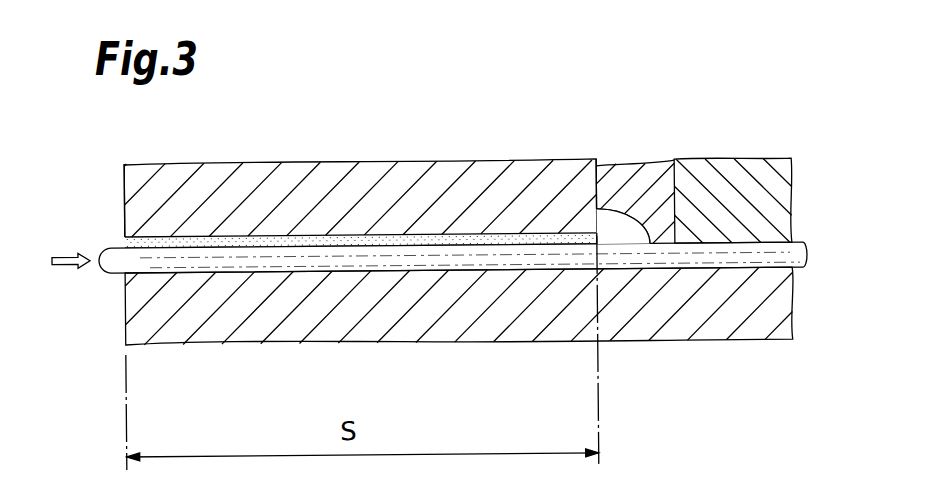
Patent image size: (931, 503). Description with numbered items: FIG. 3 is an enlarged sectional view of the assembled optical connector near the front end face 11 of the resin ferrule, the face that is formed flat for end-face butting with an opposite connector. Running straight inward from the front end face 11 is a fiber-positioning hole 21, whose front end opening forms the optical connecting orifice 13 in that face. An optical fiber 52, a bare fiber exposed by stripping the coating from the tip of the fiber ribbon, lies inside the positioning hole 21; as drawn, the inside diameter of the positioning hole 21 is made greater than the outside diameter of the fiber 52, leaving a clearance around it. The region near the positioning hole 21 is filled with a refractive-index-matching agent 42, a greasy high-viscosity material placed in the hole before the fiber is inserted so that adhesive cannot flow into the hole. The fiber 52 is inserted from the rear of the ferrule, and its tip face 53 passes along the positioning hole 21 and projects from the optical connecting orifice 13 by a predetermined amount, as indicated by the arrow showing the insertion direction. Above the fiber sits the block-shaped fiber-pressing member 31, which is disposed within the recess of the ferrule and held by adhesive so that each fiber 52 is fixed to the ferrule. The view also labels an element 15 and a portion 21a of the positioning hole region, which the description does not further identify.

The front end face 11 is at (125, 196).
The optical connecting orifice 13 is at (125, 242).
The adhesive filling portion 15 is at (625, 180).
The fiber-positioning hole 21 is at (466, 235).
The end face of fiber holding member 21a is at (598, 249).
The fiber-pressing member 31 is at (710, 167).
The refractive-index-matching agent 42 is at (364, 236).
The optical fiber 52 is at (303, 270).
The tip face 53 is at (96, 262).